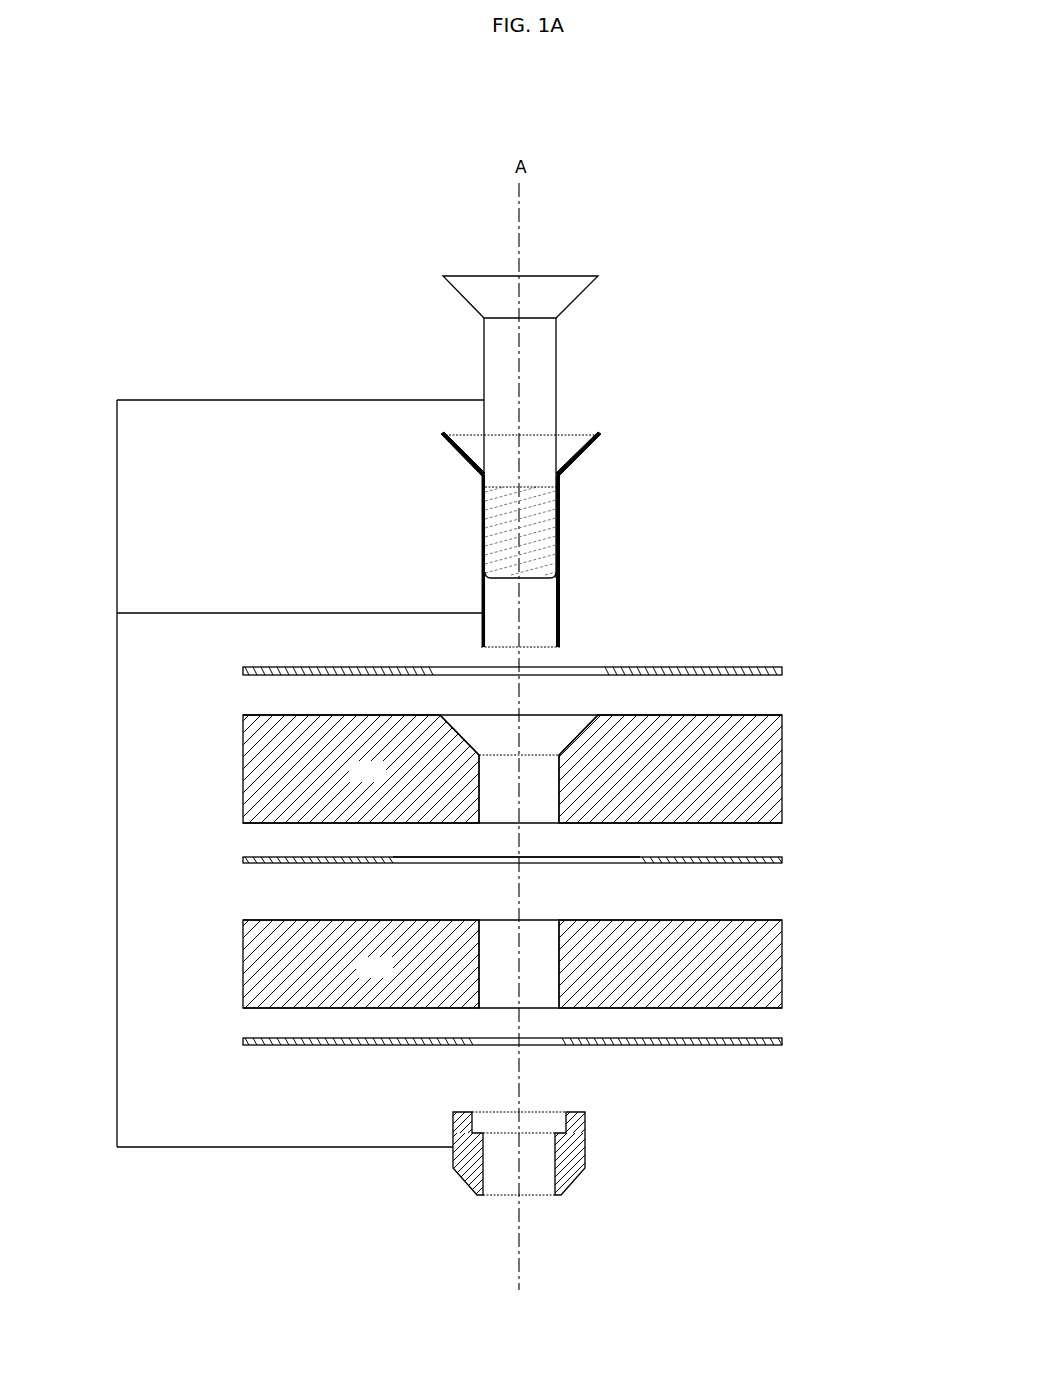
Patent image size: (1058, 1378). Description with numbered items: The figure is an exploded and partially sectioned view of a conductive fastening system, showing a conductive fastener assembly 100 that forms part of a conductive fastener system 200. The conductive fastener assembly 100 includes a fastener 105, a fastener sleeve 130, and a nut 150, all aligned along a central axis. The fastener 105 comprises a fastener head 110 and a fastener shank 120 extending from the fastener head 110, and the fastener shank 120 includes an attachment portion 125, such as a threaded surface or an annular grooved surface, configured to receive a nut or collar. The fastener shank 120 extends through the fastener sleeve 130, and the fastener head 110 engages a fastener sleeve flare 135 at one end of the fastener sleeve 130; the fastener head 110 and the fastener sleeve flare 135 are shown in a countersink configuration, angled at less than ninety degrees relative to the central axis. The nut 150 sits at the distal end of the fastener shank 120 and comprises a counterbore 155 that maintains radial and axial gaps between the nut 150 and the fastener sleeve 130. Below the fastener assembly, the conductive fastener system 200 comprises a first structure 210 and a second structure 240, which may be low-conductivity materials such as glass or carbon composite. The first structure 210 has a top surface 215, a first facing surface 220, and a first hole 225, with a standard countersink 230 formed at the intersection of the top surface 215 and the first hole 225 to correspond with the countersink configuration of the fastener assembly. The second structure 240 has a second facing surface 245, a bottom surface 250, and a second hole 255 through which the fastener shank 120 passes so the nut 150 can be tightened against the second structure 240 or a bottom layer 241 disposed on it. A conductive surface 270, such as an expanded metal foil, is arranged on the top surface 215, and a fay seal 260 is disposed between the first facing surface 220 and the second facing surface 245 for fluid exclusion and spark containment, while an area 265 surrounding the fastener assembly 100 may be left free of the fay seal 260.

The conductive fastener assembly 100 is at (117, 593).
The fastener 105 is at (523, 411).
The fastener head 110 is at (478, 281).
The fastener shank 120 is at (594, 448).
The attachment portion 125 is at (597, 532).
The fastener sleeve 130 is at (577, 561).
The fastener sleeve flare 135 is at (476, 476).
The nut 150 is at (457, 1135).
The counterbore 155 is at (480, 1104).
The conductive fastener system 200 is at (541, 115).
The first structure 210 is at (467, 772).
The top surface 215 is at (471, 702).
The first facing surface 220 is at (467, 841).
The first hole 225 is at (475, 754).
The standard countersink 230 is at (555, 722).
The second structure 240 is at (467, 963).
The bottom layer 241 is at (531, 1064).
The second facing surface 245 is at (467, 911).
The bottom surface 250 is at (476, 1022).
The second hole 255 is at (488, 949).
The fay seal 260 is at (567, 880).
The area surrounding the fastener assembly 265 is at (571, 880).
The conductive surface 270 is at (568, 648).